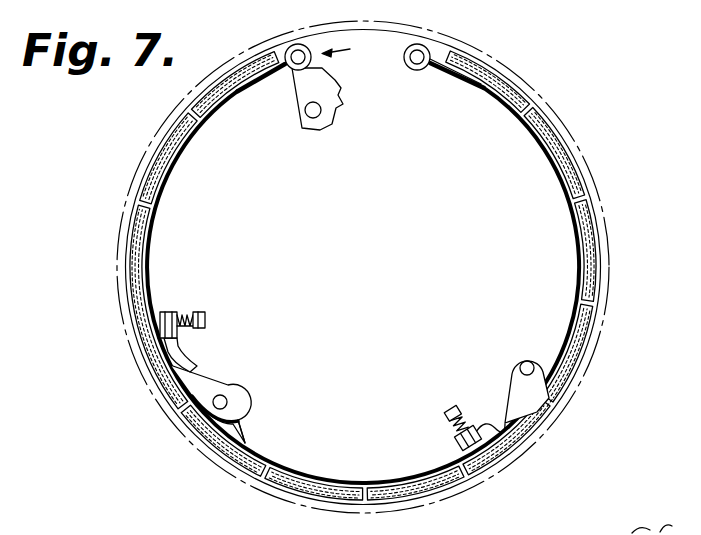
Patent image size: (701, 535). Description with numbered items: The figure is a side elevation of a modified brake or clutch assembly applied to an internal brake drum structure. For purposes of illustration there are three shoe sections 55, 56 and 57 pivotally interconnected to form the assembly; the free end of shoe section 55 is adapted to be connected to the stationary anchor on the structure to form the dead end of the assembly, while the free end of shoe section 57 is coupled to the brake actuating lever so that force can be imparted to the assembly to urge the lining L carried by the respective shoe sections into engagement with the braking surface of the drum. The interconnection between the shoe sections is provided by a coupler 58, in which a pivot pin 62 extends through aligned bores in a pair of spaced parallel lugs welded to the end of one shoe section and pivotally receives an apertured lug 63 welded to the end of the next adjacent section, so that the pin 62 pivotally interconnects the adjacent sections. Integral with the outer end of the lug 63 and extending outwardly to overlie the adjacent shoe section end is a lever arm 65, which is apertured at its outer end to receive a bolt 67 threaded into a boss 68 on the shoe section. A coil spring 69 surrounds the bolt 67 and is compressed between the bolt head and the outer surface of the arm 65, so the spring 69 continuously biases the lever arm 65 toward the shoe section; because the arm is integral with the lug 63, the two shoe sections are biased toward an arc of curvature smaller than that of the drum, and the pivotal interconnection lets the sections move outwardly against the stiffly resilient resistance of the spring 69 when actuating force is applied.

The shoe section 55 is at (550, 177).
The shoe section 56 is at (363, 488).
The shoe section 57 is at (175, 170).
The coupler 58 is at (232, 388).
The pivot pin 62 is at (228, 403).
The apertured lug 63 is at (241, 427).
The lever arm 65 is at (188, 360).
The bolt 67 is at (205, 317).
The boss 68 is at (161, 313).
The coil spring 69 is at (182, 313).
The lining L is at (192, 429).